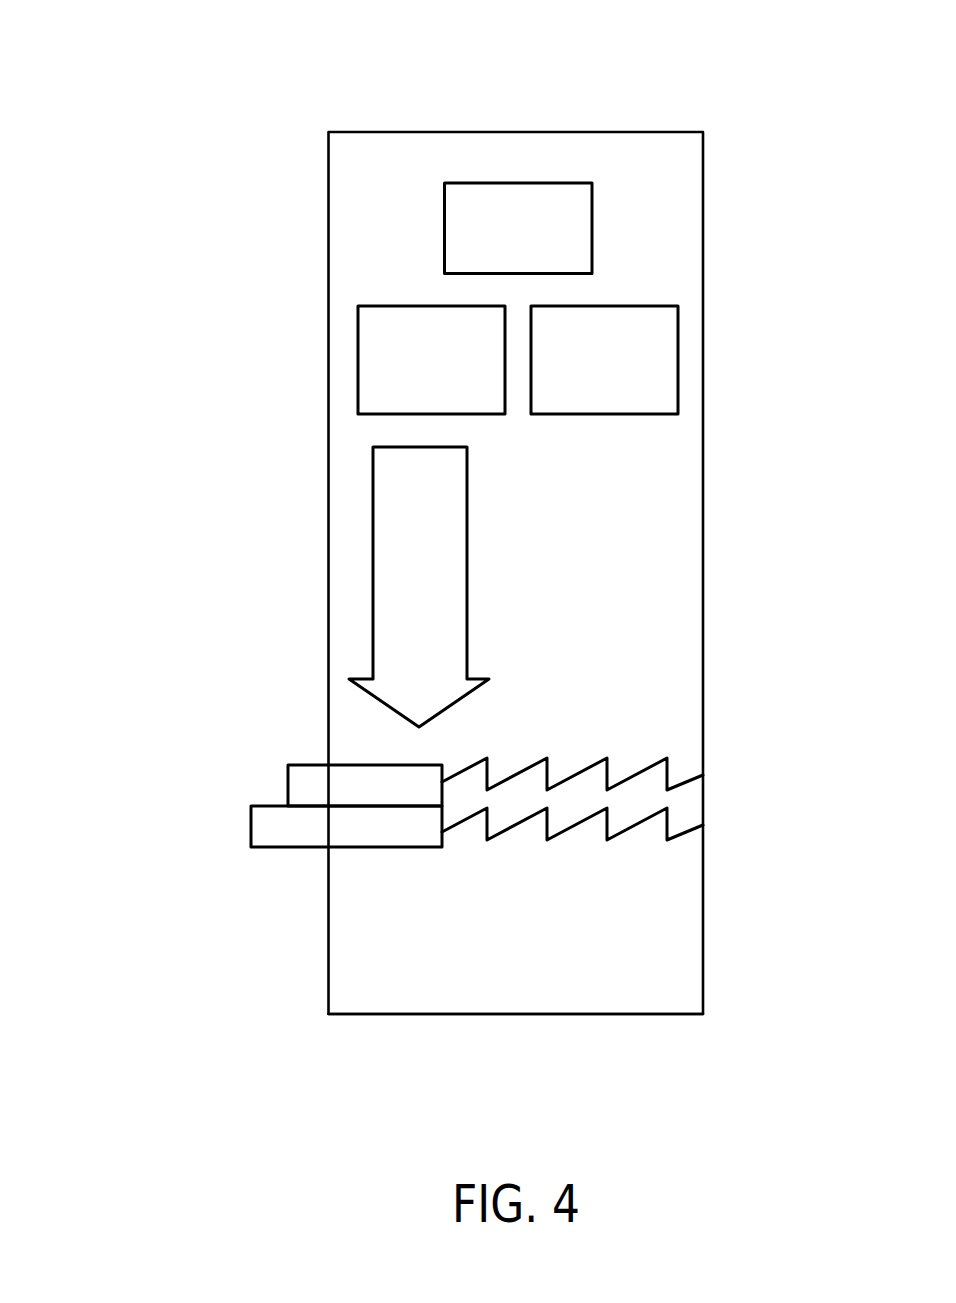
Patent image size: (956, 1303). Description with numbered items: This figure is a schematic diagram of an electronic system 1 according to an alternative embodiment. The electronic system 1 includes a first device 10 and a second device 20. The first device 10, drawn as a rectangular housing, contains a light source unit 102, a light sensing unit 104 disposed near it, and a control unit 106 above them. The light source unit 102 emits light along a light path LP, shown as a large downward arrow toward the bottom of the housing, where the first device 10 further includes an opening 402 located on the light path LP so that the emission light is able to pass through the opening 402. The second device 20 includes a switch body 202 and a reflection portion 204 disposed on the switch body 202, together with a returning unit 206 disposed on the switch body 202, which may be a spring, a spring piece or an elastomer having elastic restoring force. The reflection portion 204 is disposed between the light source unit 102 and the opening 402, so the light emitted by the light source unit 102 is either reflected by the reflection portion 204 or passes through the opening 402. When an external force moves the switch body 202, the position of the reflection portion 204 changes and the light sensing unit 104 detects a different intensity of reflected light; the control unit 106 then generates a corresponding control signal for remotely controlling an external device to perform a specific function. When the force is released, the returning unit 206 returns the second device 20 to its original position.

The electronic system 1 is at (718, 57).
The first device 10 is at (703, 202).
The light source unit 102 is at (422, 306).
The light sensing unit 104 is at (613, 306).
The control unit 106 is at (562, 183).
The second device 20 is at (163, 773).
The switch body 202 is at (264, 830).
The reflection portion 204 is at (300, 780).
The returning unit 206 is at (690, 779).
The opening 402 is at (572, 1018).
The light path LP is at (389, 563).